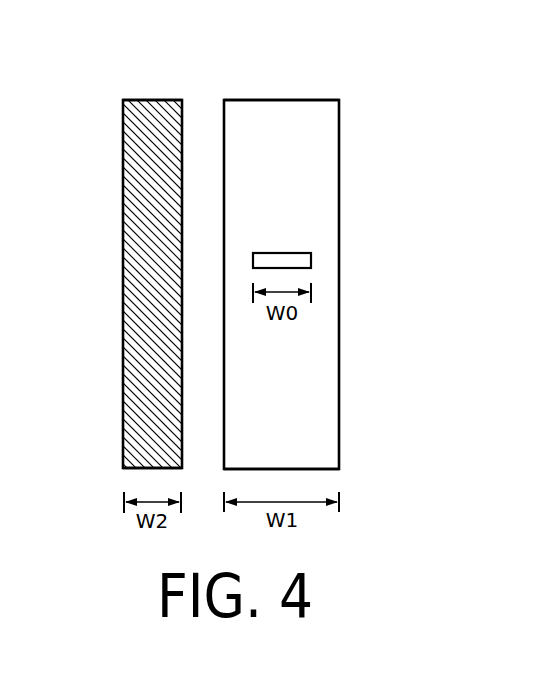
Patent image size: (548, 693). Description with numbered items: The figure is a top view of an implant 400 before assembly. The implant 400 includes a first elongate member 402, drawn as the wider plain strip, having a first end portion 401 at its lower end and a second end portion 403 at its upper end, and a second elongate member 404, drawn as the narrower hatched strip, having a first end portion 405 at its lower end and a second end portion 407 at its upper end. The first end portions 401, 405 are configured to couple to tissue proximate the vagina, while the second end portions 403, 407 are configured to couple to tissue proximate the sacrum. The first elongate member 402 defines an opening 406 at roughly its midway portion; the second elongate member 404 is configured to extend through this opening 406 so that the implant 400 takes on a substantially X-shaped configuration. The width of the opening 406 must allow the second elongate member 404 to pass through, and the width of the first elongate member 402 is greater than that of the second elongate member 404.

The implant 400 is at (161, 58).
The first end portion of the first elongate member 401 is at (333, 460).
The first elongate member 402 is at (330, 367).
The second end portion of the first elongate member 403 is at (330, 128).
The second elongate member 404 is at (133, 315).
The first end portion of the second elongate member 405 is at (133, 440).
The opening 406 is at (305, 268).
The second end portion of the second elongate member 407 is at (133, 120).